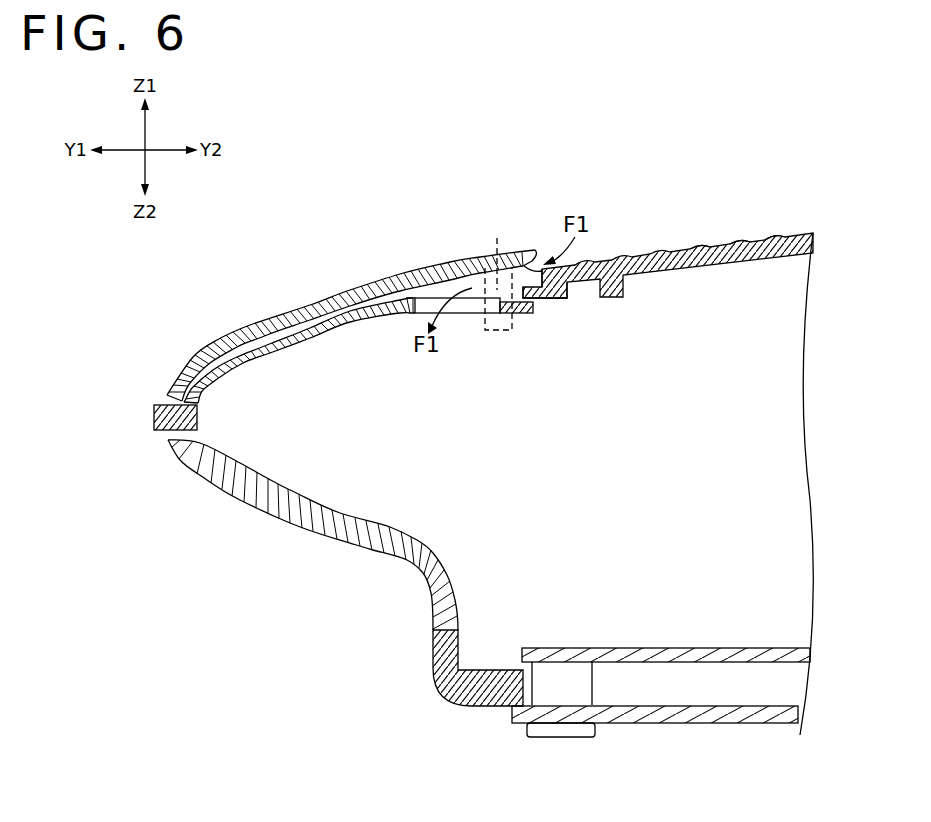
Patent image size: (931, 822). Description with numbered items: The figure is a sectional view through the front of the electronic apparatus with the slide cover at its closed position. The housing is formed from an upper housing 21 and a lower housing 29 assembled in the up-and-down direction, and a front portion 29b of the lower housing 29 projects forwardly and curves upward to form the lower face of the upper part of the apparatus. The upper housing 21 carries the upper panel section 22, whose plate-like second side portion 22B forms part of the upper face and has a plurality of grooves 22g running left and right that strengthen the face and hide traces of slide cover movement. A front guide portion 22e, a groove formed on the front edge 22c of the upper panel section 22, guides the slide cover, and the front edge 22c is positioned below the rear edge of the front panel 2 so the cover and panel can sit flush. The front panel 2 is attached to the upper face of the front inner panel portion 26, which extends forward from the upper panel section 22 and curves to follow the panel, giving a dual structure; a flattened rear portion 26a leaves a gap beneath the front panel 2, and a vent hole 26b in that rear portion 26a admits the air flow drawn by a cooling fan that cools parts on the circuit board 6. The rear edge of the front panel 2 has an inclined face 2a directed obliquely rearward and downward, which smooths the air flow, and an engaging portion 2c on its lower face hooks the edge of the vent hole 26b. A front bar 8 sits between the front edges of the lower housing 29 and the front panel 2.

The front panel 2 is at (320, 300).
The inclined face 2a is at (542, 258).
The engaging portion 2c is at (497, 252).
The circuit board 6 is at (689, 655).
The front bar 8 is at (154, 418).
The upper housing 21 is at (674, 172).
The upper panel section 22 is at (729, 234).
The second side portion 22B is at (684, 252).
The front edge of the upper panel section 22c is at (516, 248).
The front guide portion 22e is at (545, 302).
The grooves 22g is at (787, 235).
The front inner panel portion 26 is at (270, 330).
The rear portion 26a is at (409, 296).
The vent hole 26b is at (470, 314).
The lower housing 29 is at (703, 721).
The front portion of the lower housing 29b is at (289, 514).